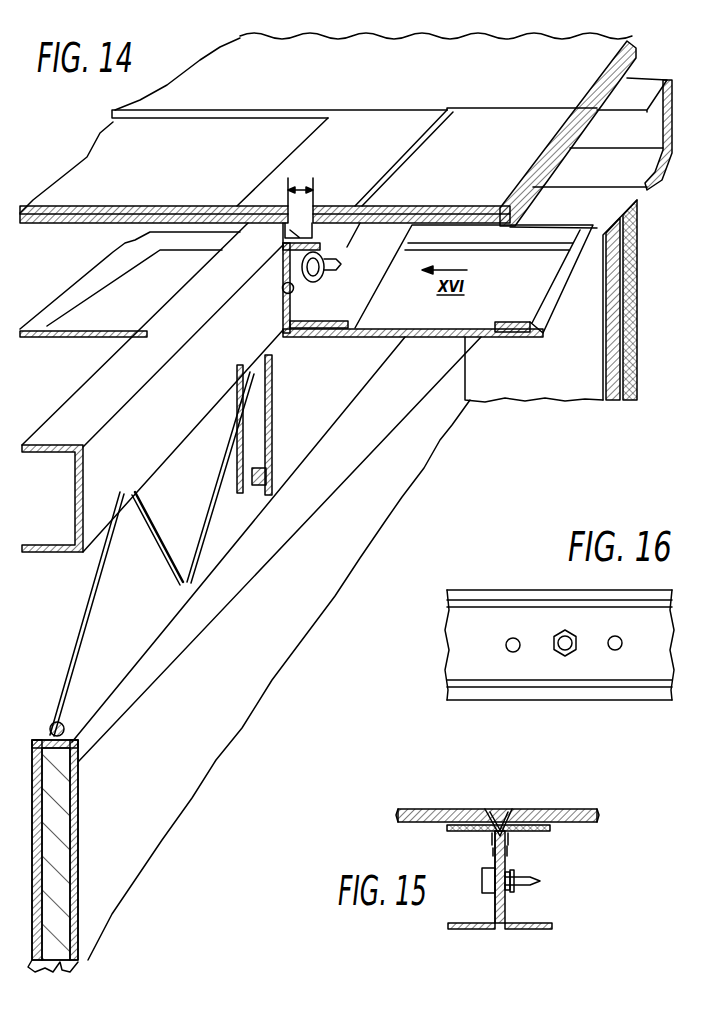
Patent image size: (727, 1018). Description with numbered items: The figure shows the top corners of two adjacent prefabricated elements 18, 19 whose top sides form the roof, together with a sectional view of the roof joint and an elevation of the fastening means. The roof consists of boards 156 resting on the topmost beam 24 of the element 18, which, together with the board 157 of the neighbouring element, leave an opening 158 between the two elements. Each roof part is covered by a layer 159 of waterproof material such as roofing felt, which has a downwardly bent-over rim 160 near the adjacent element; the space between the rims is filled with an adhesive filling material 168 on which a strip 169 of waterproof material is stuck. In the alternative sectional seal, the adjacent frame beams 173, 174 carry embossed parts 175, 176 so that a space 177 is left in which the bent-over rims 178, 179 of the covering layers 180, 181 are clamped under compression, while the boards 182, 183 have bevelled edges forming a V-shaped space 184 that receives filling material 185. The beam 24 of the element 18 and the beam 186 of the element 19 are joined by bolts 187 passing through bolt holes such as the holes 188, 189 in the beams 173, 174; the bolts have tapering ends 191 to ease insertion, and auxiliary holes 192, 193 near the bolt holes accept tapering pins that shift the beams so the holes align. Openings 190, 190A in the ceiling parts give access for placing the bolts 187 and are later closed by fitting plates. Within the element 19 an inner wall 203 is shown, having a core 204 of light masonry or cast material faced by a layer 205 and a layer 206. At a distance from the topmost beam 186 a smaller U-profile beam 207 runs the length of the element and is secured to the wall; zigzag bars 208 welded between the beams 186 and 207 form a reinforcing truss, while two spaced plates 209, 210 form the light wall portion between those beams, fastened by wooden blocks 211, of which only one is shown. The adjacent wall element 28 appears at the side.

In FIG. 14, the board 157 is at (72, 224).
In FIG. 14, the opening 158 is at (292, 186).
In FIG. 14, the layer of waterproof material 159 is at (457, 188).
In FIG. 14, the downwardly bent-over rim 160 is at (309, 233).
In FIG. 14, the adhesive filling material 168 is at (283, 236).
In FIG. 14, the strip of waterproof material 169 is at (272, 177).
In FIG. 14, the board 156 is at (507, 217).
In FIG. 14, the wall 28 is at (652, 178).
In FIG. 14, the beam 24 is at (346, 308).
In FIG. 16, the beam 24 is at (643, 690).
In FIG. 14, the opening 190 is at (453, 319).
In FIG. 14, the opening 190A is at (110, 338).
In FIG. 14, the bolt 187 is at (331, 263).
In FIG. 16, the bolt 187 is at (573, 650).
In FIG. 15, the bolt 187 is at (482, 880).
In FIG. 14, the auxiliary hole 192 is at (282, 291).
In FIG. 16, the auxiliary hole 192 is at (512, 639).
In FIG. 16, the auxiliary hole 193 is at (621, 638).
In FIG. 14, the element 18 is at (312, 339).
In FIG. 14, the beam 186 is at (63, 406).
In FIG. 14, the element 19 is at (57, 558).
In FIG. 14, the plate 209 is at (272, 440).
In FIG. 14, the plate 210 is at (223, 456).
In FIG. 14, the bar 208 is at (98, 580).
In FIG. 14, the wooden block 211 is at (254, 487).
In FIG. 14, the beam 207 is at (162, 652).
In FIG. 14, the inner wall 203 is at (60, 968).
In FIG. 14, the core 204 is at (68, 897).
In FIG. 14, the layer 205 is at (78, 836).
In FIG. 14, the layer 206 is at (52, 981).
In FIG. 15, the covering layer 180 is at (557, 808).
In FIG. 15, the covering layer 181 is at (445, 807).
In FIG. 15, the board 182 is at (600, 814).
In FIG. 15, the board 183 is at (398, 815).
In FIG. 15, the V-shaped space 184 is at (497, 808).
In FIG. 15, the filling material 185 is at (503, 810).
In FIG. 15, the hole 188 is at (512, 905).
In FIG. 15, the hole 189 is at (494, 903).
In FIG. 15, the frame beam 173 is at (527, 930).
In FIG. 15, the frame beam 174 is at (487, 930).
In FIG. 15, the embossed part 175 is at (510, 848).
In FIG. 15, the embossed part 176 is at (492, 852).
In FIG. 15, the space 177 is at (525, 870).
In FIG. 15, the downwardly bent-over rim 178 is at (515, 838).
In FIG. 15, the downwardly bent-over rim 179 is at (490, 841).
In FIG. 15, the tapering end 191 is at (540, 890).